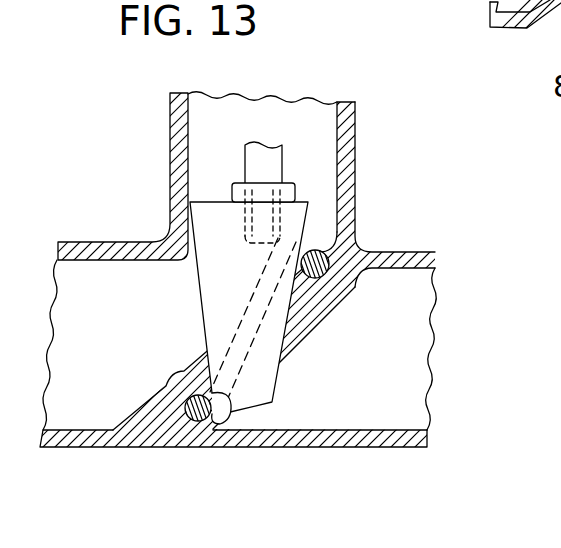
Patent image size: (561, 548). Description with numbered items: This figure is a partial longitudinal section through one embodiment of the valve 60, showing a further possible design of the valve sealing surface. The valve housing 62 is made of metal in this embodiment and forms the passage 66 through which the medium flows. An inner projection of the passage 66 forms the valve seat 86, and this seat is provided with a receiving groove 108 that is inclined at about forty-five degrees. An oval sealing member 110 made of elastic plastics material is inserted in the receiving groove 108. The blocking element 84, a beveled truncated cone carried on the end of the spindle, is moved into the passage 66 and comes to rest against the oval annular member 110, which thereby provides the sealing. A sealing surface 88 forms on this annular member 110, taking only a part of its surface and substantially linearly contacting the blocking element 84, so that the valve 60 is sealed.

The valve 60 is at (84, 163).
The valve housing 62 is at (483, 247).
The passage 66 is at (404, 374).
The blocking element 84 is at (213, 271).
The valve seat 86 is at (340, 278).
The sealing surface 88 is at (323, 254).
The receiving groove 108 is at (342, 244).
The oval sealing member 110 is at (308, 268).